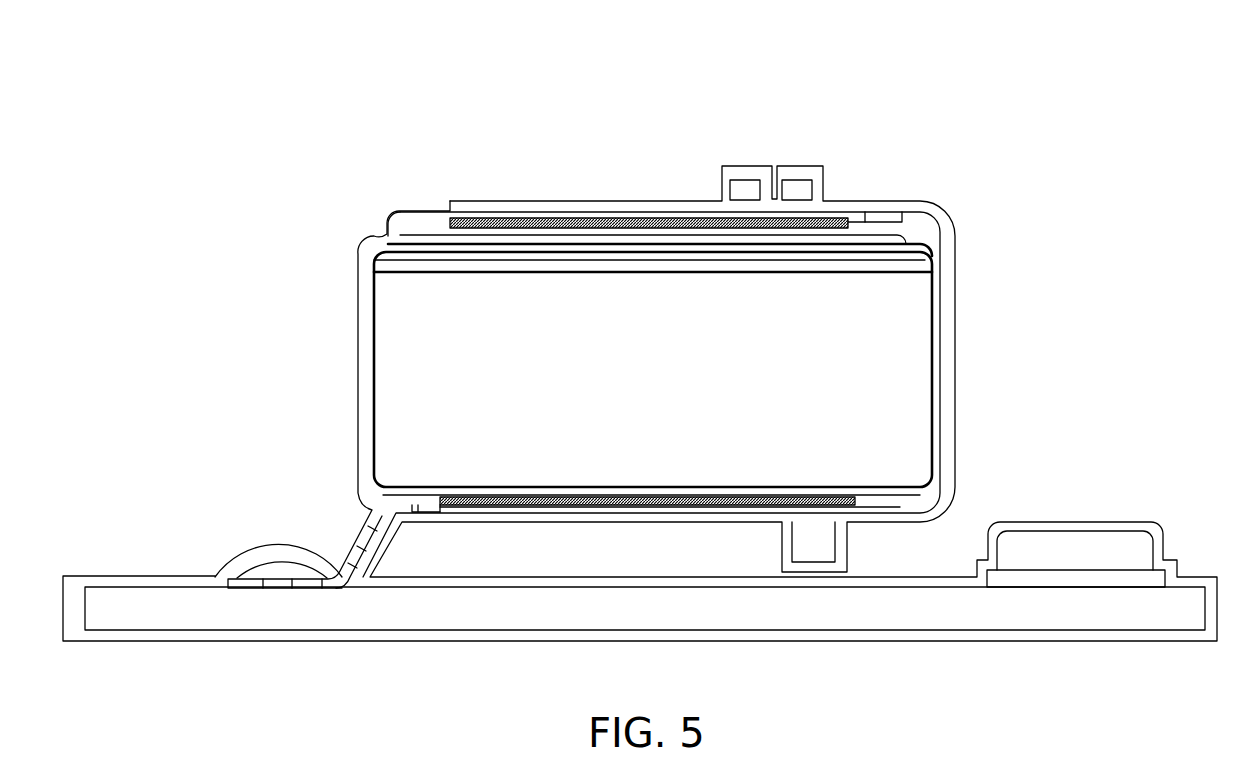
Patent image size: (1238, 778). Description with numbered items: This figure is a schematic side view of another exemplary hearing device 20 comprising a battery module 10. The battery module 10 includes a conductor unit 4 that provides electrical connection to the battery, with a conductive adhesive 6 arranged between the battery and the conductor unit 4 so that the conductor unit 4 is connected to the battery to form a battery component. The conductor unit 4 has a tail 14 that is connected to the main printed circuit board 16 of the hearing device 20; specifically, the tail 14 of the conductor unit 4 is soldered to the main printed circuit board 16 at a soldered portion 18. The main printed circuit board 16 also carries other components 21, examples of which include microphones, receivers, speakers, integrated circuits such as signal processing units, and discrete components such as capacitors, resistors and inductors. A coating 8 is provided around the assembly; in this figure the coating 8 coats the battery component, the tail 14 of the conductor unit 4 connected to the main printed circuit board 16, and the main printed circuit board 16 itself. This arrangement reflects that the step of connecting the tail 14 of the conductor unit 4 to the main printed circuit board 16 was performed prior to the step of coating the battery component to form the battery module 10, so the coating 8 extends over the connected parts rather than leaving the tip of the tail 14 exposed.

The hearing device 20 is at (330, 78).
The battery module 10 is at (522, 166).
The other components 21 is at (796, 186).
The conductive adhesive 6 is at (829, 216).
The conductor unit 4 is at (944, 260).
The coating 8 is at (950, 402).
The tail 14 is at (360, 545).
The soldered portion 18 is at (284, 566).
The main printed circuit board 16 is at (138, 600).